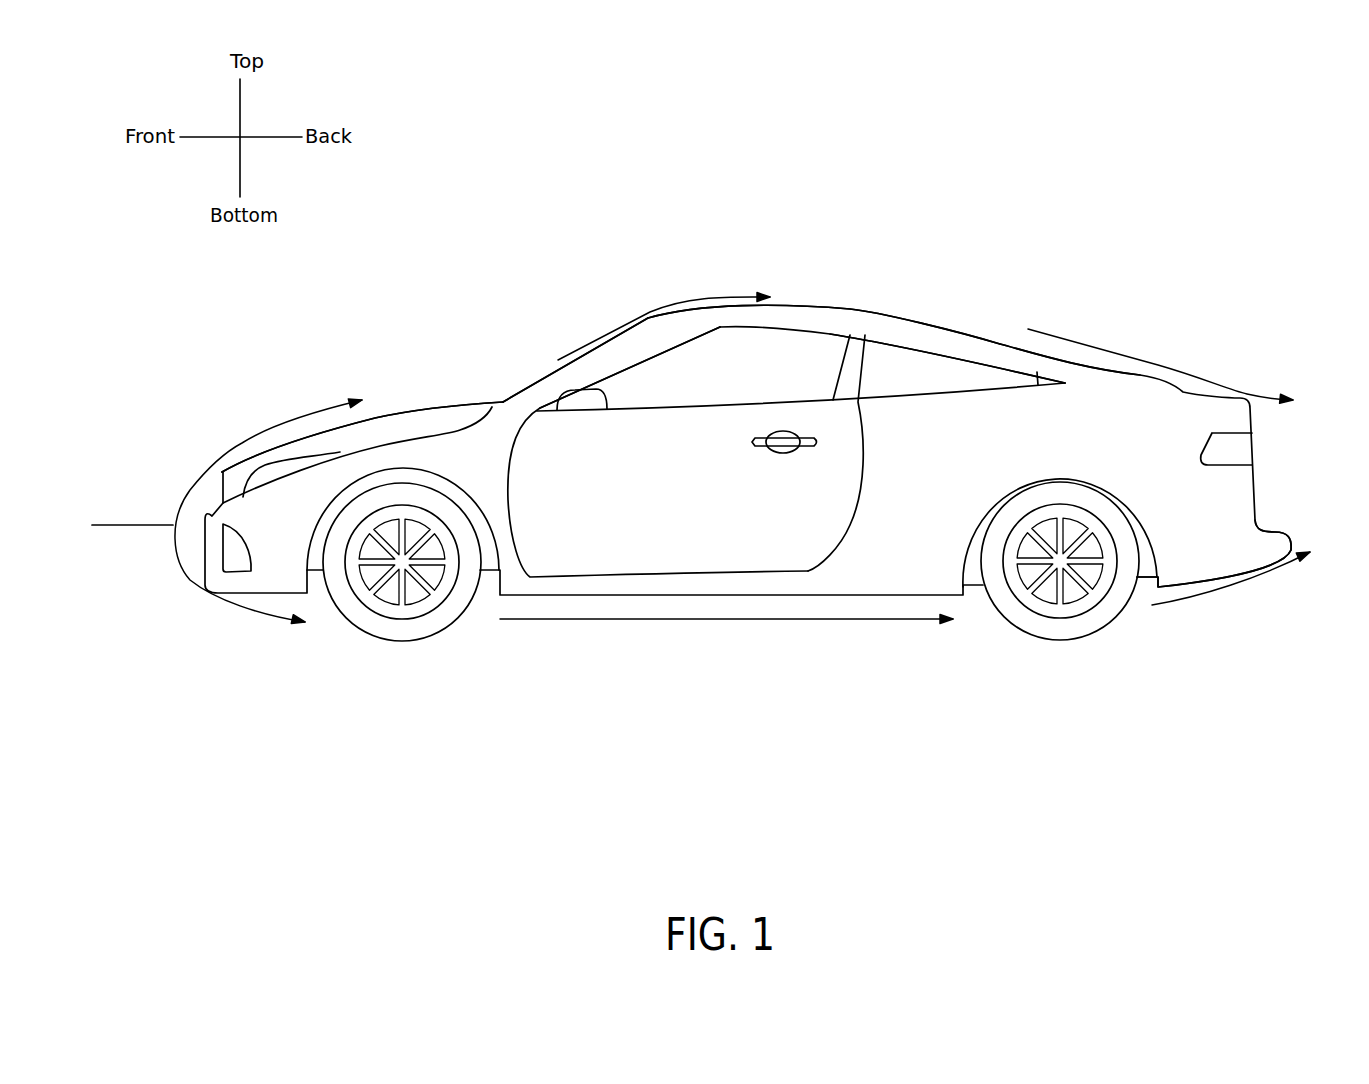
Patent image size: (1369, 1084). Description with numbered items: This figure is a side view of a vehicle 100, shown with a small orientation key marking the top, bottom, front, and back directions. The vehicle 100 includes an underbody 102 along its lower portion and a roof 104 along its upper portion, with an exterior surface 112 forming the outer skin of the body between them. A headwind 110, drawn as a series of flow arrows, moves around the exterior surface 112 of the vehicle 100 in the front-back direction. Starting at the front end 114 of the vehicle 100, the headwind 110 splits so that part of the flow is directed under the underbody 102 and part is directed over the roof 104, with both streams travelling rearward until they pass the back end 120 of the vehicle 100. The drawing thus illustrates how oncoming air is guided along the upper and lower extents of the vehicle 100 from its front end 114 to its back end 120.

The vehicle 100 is at (555, 272).
The underbody 102 is at (1180, 588).
The roof 104 is at (915, 317).
The headwind 110 is at (242, 443).
The exterior surface 112 is at (503, 402).
The front end 114 is at (408, 395).
The back end 120 is at (1010, 325).